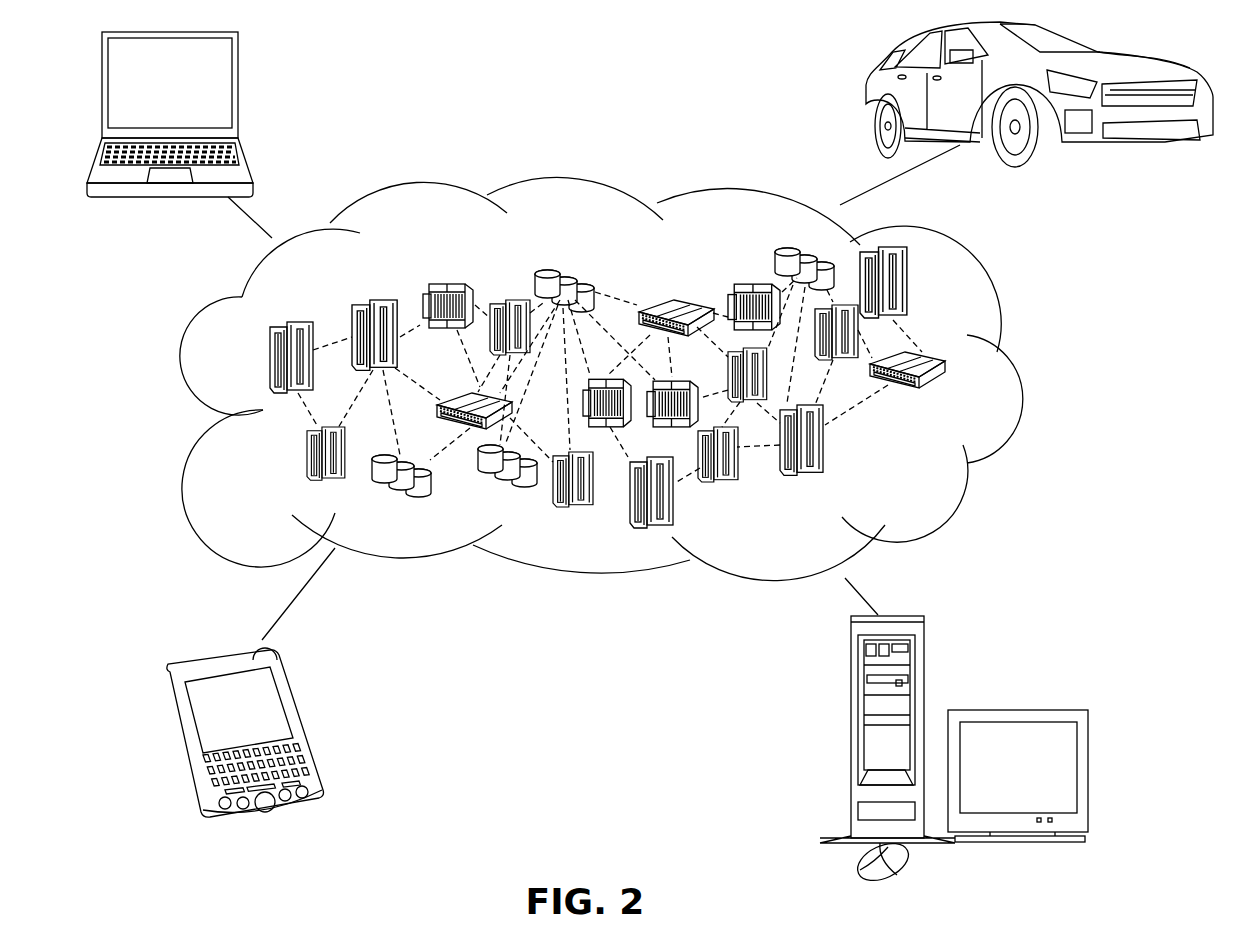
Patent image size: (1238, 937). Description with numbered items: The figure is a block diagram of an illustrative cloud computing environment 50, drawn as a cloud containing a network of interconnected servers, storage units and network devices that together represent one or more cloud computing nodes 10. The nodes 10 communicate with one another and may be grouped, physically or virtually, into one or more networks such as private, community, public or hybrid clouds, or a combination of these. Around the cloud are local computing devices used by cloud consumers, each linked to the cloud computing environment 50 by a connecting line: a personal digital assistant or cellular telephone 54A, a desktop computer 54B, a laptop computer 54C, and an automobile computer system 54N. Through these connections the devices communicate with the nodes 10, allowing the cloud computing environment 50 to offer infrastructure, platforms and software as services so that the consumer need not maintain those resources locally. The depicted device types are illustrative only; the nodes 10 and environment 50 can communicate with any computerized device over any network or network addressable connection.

The cloud computing node 10 is at (930, 473).
The cloud computing environment 50 is at (1012, 370).
The personal digital assistant (PDA) or cellular telephone 54A is at (293, 690).
The desktop computer 54B is at (850, 678).
The laptop computer 54C is at (240, 68).
The automobile computer system 54N is at (868, 82).